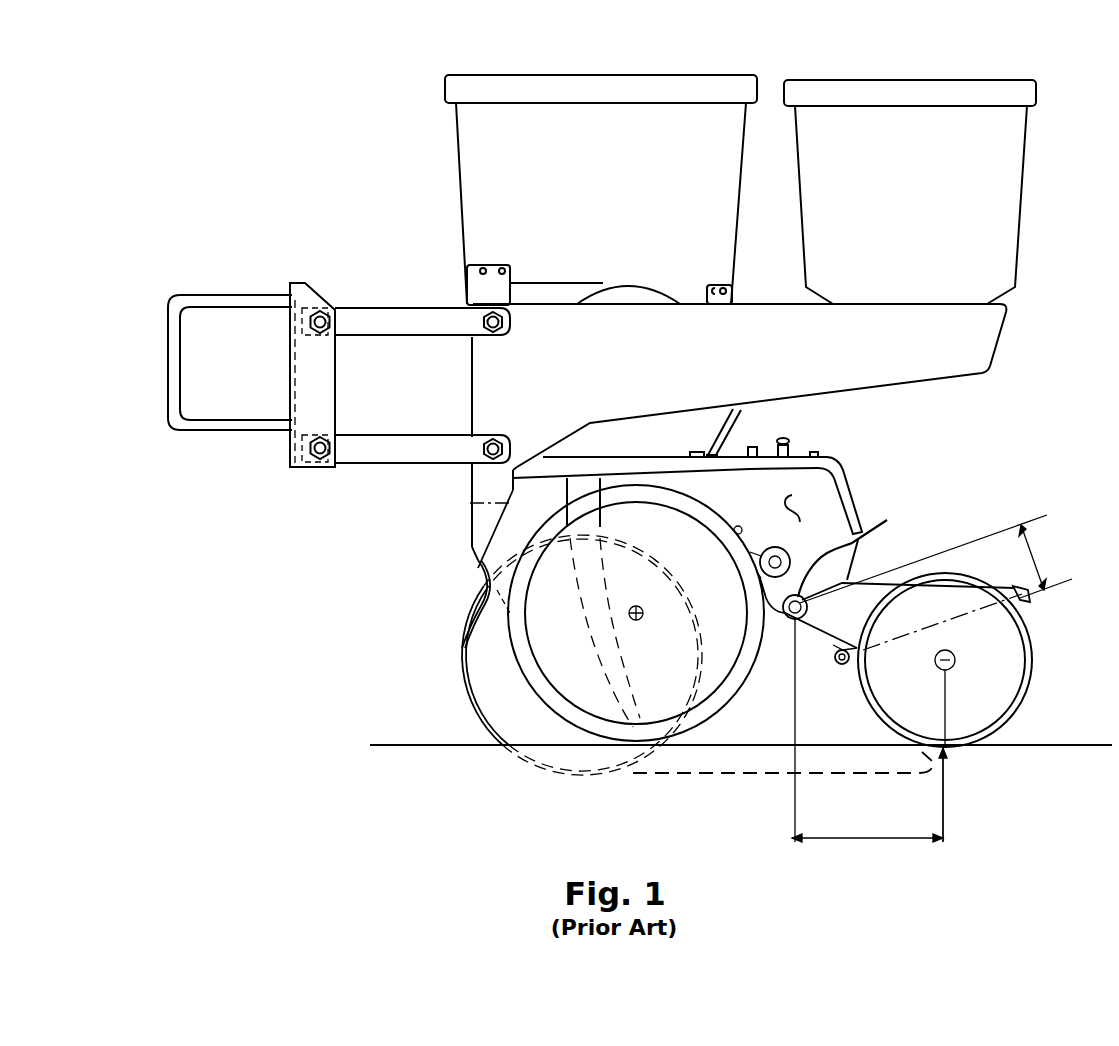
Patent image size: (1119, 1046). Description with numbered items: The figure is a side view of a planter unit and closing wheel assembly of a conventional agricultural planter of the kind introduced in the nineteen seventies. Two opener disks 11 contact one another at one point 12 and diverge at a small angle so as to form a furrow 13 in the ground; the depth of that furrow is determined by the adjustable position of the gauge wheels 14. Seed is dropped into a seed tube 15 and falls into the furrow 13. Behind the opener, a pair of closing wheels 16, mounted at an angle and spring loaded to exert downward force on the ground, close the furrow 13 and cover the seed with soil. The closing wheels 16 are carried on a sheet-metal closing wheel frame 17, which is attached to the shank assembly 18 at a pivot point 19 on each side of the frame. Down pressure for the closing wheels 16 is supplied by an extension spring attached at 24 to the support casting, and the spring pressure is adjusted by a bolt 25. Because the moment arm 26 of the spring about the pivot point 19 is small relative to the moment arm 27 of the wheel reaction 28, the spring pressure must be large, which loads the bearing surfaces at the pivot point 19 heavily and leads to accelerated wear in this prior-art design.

The opener disks 11 is at (467, 683).
The contact point 12 is at (510, 750).
The furrow 13 is at (732, 775).
The gauge wheels 14 is at (507, 627).
The seed tube 15 is at (607, 597).
The closing wheels 16 is at (1034, 667).
The closing wheel frame 17 is at (858, 578).
The shank assembly 18 is at (800, 507).
The pivot point 19 is at (859, 547).
The spring attachment point 24 is at (841, 665).
The bolt 25 is at (1030, 592).
The moment arm of the spring 26 is at (1036, 556).
The moment arm of the wheel reaction 27 is at (856, 840).
The wheel reaction 28 is at (946, 790).